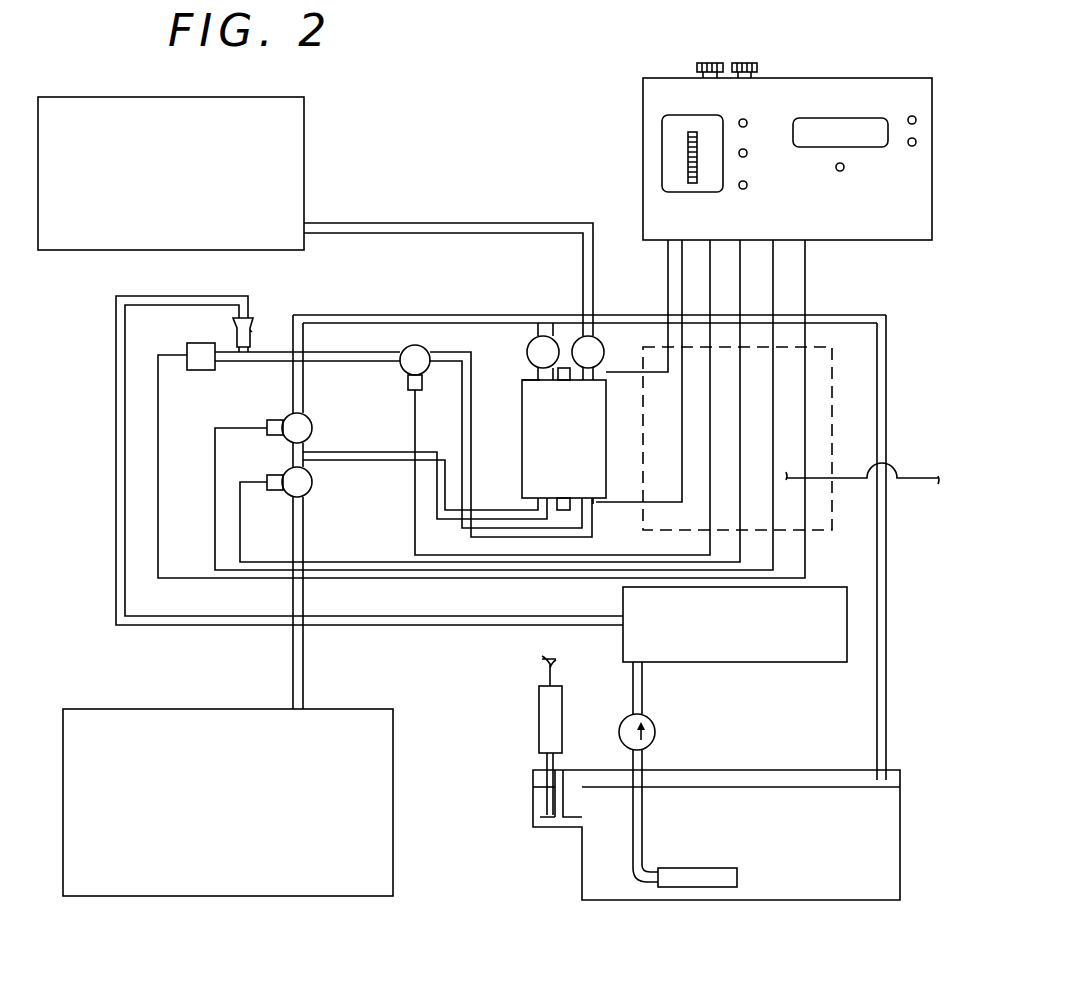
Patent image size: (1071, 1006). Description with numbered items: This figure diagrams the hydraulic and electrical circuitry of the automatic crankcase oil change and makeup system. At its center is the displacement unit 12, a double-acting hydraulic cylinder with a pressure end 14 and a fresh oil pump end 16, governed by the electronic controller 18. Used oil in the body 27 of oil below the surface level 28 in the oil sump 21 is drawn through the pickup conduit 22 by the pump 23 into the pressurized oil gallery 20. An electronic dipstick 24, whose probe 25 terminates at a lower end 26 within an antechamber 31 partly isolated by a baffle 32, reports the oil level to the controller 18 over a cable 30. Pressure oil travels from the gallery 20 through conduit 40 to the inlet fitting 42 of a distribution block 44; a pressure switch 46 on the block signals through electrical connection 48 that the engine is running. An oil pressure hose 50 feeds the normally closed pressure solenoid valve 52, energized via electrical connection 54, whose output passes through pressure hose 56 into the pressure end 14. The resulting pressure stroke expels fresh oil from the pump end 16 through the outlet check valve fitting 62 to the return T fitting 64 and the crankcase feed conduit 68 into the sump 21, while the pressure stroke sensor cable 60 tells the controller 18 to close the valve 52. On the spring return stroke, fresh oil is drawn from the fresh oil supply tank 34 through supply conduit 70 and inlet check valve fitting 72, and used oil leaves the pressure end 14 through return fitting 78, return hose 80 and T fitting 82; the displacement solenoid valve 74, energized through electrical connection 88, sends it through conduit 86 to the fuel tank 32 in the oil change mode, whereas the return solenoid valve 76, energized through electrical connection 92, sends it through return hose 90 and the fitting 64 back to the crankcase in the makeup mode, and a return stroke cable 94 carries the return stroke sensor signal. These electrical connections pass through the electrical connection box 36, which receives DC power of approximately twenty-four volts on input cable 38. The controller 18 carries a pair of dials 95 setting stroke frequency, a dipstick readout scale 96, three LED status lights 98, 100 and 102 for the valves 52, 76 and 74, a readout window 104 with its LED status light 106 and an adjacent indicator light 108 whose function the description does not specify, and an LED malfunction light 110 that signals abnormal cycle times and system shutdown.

The displacement unit 12 is at (564, 439).
The pressure end 14 is at (596, 503).
The fresh oil pump end 16 is at (524, 380).
The electronic controller 18 is at (641, 96).
The pressurized oil gallery 20 is at (808, 662).
The oil sump 21 is at (579, 868).
The pickup conduit 22 is at (643, 822).
The pump 23 is at (657, 730).
The electronic dipstick 24 is at (538, 742).
The probe 25 is at (530, 779).
The lower end 26 is at (538, 820).
The body of crankcase oil 27 is at (747, 840).
The surface level 28 is at (722, 786).
The cable 30 is at (537, 666).
The antechamber 31 is at (536, 800).
The fuel tank 32 is at (393, 760).
The fresh oil supply tank 34 is at (304, 132).
The electrical connection box 36 is at (832, 420).
The power supply input cable 38 is at (922, 476).
The conduit 40 is at (116, 438).
The inlet fitting 42 is at (258, 316).
The distribution block 44 is at (254, 332).
The pressure switch 46 is at (192, 336).
The electrical connection 48 is at (160, 397).
The oil pressure hose 50 is at (314, 352).
The pressure solenoid valve 52 is at (425, 346).
The electrical connection 54 is at (414, 408).
The pressure hose 56 is at (460, 430).
The pressure stroke sensor cable 60 is at (622, 370).
The outlet check valve fitting 62 is at (548, 332).
The return T fitting 64 is at (539, 316).
The crankcase feed conduit 68 is at (642, 315).
The supply conduit 70 is at (472, 223).
The inlet check valve fitting 72 is at (597, 332).
The displacement solenoid valve 74 is at (310, 492).
The return solenoid valve 76 is at (312, 428).
The return fitting 78 is at (305, 383).
The return hose 80 is at (383, 462).
The T fitting 82 is at (308, 462).
The conduit 86 is at (304, 689).
The electrical connection 88 is at (240, 524).
The return hose 90 is at (402, 315).
The electrical connection 92 is at (238, 437).
The return stroke cable 94 is at (677, 420).
The pair of dials 95 is at (718, 63).
The readout scale 96 is at (690, 156).
The LED status light 98 is at (746, 119).
The LED status light 100 is at (747, 155).
The LED status light 102 is at (747, 185).
The readout window 104 is at (840, 132).
The LED status light 106 is at (909, 117).
The indicator light 108 is at (910, 146).
The LED malfunction light 110 is at (844, 169).